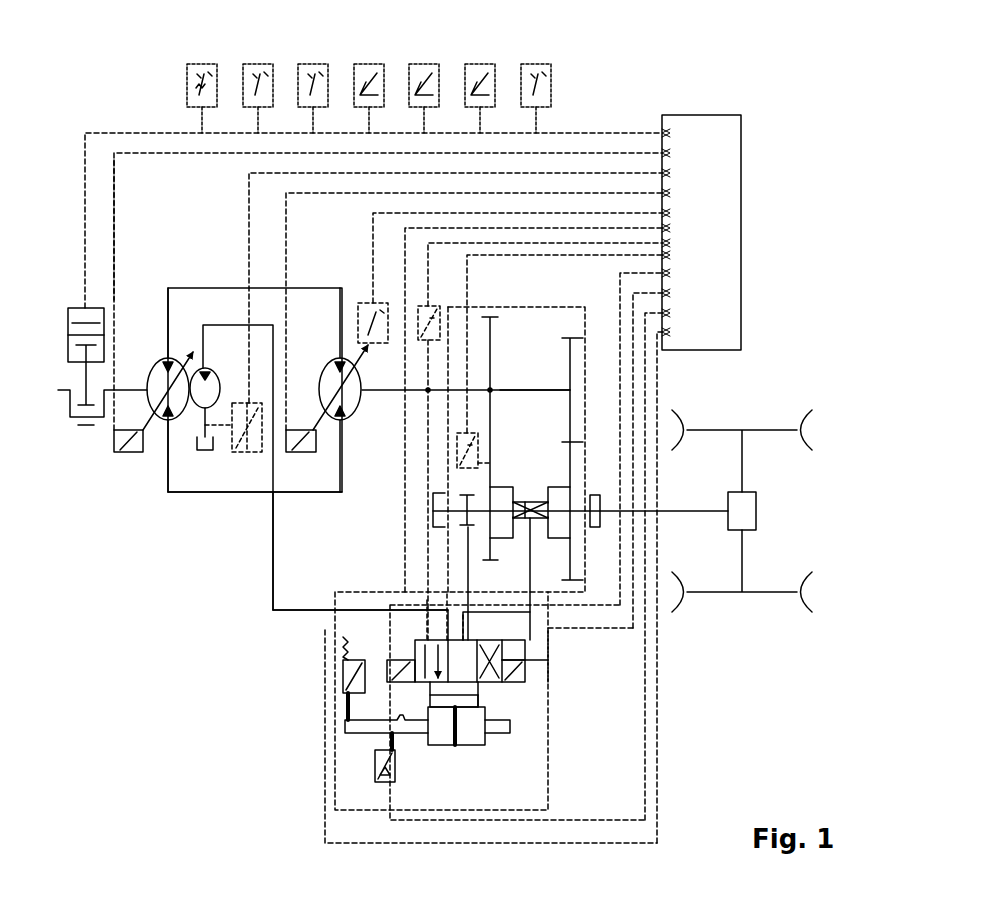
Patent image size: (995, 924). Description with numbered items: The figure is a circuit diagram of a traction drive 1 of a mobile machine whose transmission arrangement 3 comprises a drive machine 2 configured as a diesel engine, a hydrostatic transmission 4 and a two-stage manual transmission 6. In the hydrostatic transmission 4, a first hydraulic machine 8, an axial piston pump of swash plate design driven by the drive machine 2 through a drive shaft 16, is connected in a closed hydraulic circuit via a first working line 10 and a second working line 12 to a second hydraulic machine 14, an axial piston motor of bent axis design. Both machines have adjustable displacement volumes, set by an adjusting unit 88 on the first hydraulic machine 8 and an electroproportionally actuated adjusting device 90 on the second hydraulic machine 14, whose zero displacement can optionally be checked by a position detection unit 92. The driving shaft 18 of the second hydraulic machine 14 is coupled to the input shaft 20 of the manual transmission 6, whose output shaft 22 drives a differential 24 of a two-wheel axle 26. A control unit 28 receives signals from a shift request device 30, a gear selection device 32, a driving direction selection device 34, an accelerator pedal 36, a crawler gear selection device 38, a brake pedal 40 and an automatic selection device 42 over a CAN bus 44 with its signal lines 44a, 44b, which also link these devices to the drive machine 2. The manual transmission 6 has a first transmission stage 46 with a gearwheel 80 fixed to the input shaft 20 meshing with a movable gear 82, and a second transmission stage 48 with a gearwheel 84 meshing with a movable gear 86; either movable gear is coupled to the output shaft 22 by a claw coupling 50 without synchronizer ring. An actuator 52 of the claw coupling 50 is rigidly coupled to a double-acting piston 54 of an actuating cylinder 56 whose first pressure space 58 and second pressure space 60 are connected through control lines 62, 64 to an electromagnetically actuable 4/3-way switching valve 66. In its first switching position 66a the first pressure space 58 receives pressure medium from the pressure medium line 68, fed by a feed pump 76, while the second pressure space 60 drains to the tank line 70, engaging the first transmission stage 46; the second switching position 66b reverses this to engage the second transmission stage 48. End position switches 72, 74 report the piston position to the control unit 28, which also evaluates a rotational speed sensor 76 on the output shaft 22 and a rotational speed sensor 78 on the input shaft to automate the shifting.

The traction drive 1 is at (805, 100).
The drive machine 2 is at (70, 455).
The transmission arrangement 3 is at (285, 715).
The hydrostatic transmission 4 is at (225, 510).
The manual transmission 6 is at (552, 307).
The first hydraulic machine 8 is at (152, 358).
The first working line 10 is at (200, 288).
The second working line 12 is at (297, 495).
The second hydraulic machine 14 is at (325, 362).
The drive shaft 16 is at (140, 372).
The driving shaft 18 is at (378, 390).
The input shaft 20 is at (547, 387).
The output shaft 22 is at (583, 507).
The differential 24 is at (757, 511).
The axle 26 is at (752, 415).
The control unit 28 is at (712, 245).
The shift request device 30 is at (197, 62).
The gear selection device 32 is at (243, 80).
The driving direction selection device 34 is at (298, 78).
The accelerator pedal 36 is at (354, 78).
The crawler gear selection device 38 is at (409, 78).
The brake pedal 40 is at (465, 78).
The automatic selection device 42 is at (551, 85).
The CAN bus 44 is at (85, 183).
The signal line 44a is at (114, 183).
The signal line 44b is at (620, 640).
The first transmission stage 46 is at (563, 460).
The second transmission stage 48 is at (495, 455).
The claw coupling 50 is at (528, 487).
The actuator 52 is at (535, 520).
The piston 54 is at (455, 750).
The actuating cylinder 56 is at (482, 735).
The first pressure space 58 is at (428, 735).
The second pressure space 60 is at (487, 730).
The control line 62 is at (432, 701).
The control line 64 is at (480, 701).
The 4/3-way switching valve 66 is at (415, 648).
The first switching position 66a is at (430, 600).
The second switching position 66b is at (526, 652).
The pressure medium line 68 is at (282, 612).
The tank line 70 is at (468, 605).
The end position switch 72 is at (343, 682).
The end position switch 74 is at (375, 772).
The rotational speed sensor 76 is at (212, 375).
The rotational speed sensor 78 is at (428, 306).
The gearwheel 80 is at (572, 352).
The movable gear 82 is at (572, 452).
The gearwheel 84 is at (492, 342).
The movable gear 86 is at (533, 496).
The adjusting unit 88 is at (128, 455).
The adjusting device 90 is at (318, 452).
The position detection unit 92 is at (365, 303).